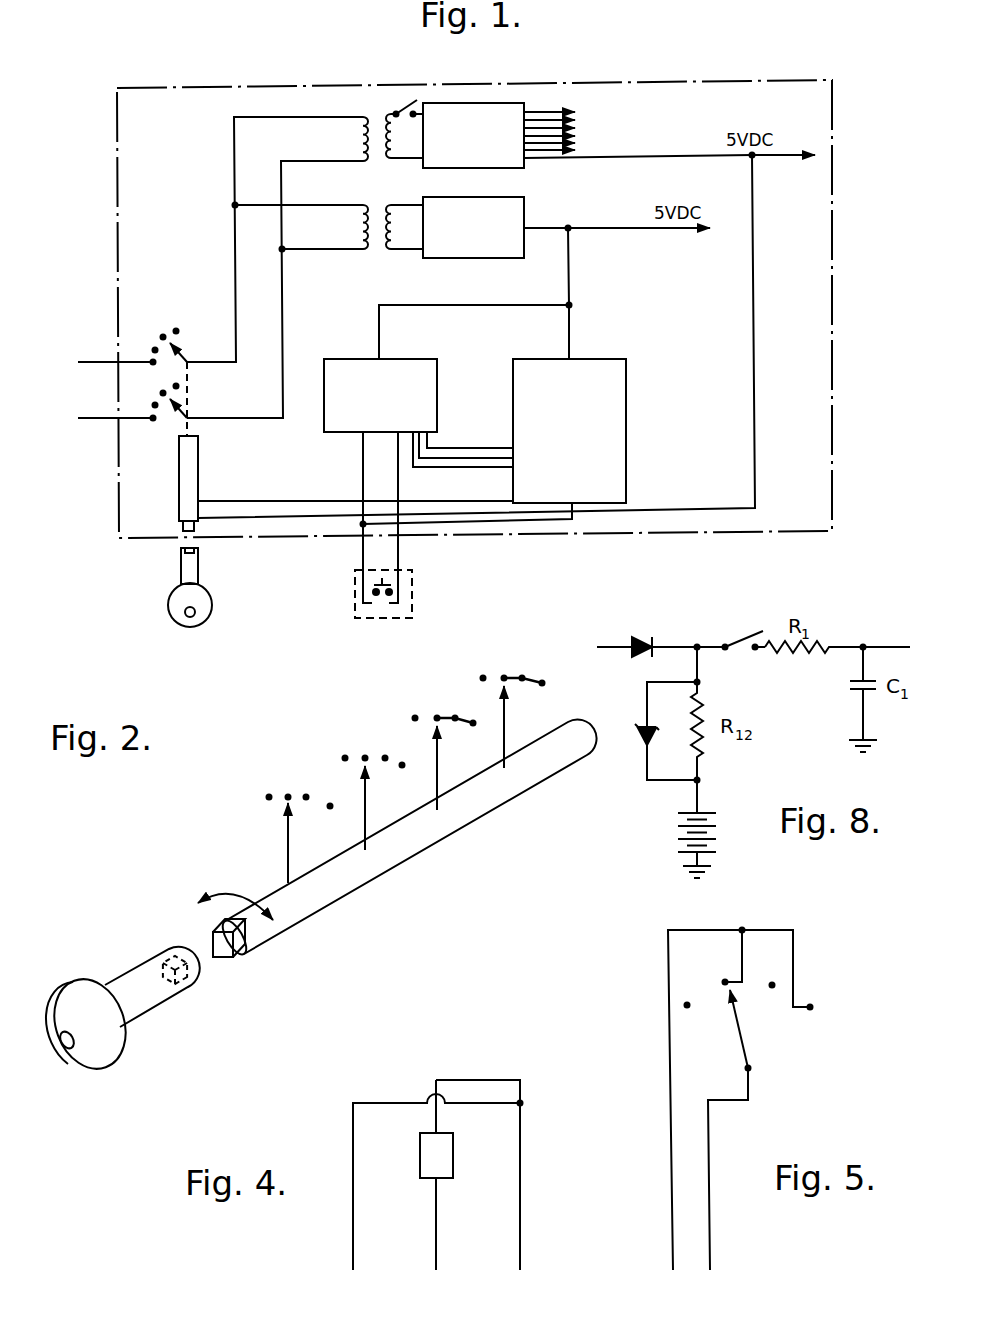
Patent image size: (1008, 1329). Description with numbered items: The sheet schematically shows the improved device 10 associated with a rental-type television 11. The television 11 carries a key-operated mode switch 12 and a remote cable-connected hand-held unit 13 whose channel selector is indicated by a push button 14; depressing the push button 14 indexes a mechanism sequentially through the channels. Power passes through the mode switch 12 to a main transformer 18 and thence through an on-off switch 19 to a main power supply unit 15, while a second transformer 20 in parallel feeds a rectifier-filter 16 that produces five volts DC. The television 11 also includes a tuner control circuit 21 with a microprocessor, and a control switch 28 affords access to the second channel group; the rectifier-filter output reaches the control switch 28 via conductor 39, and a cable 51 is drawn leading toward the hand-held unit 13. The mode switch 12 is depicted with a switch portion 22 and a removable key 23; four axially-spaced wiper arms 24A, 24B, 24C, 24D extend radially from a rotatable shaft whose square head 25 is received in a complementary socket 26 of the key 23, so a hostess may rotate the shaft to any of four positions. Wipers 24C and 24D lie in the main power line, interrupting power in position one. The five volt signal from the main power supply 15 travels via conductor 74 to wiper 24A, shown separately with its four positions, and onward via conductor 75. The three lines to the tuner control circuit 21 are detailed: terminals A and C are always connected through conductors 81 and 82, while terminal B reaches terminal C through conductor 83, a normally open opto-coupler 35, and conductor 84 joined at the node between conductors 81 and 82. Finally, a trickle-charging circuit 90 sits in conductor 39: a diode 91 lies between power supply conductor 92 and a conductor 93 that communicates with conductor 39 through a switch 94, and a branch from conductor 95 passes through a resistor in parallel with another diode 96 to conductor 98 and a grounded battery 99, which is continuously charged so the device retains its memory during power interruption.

In FIG. 1, the improved device 10 is at (640, 352).
In FIG. 1, the television 11 is at (722, 78).
In FIG. 1, the key-operated mode switch 12 is at (214, 487).
In FIG. 2, the key-operated mode switch 12 is at (190, 860).
In FIG. 1, the hand-held unit 13 is at (350, 592).
In FIG. 1, the push button 14 is at (405, 587).
In FIG. 1, the main power supply unit 15 is at (478, 103).
In FIG. 1, the rectifier-filter 16 is at (477, 259).
In FIG. 1, the main transformer 18 is at (362, 132).
In FIG. 1, the on-off switch 19 is at (402, 108).
In FIG. 1, the second transformer 20 is at (362, 220).
In FIG. 1, the tuner control circuit 21 is at (437, 373).
In FIG. 2, the switch portion 22 is at (408, 866).
In FIG. 2, the removable key 23 is at (139, 1030).
In FIG. 2, the wiper arm 24A is at (290, 833).
In FIG. 5, the wiper arm 24A is at (742, 1040).
In FIG. 2, the wiper arm 24B is at (366, 792).
In FIG. 1, the wiper arm 24C is at (182, 419).
In FIG. 2, the wiper arm 24C is at (438, 757).
In FIG. 1, the wiper arm 24D is at (182, 349).
In FIG. 2, the wiper arm 24D is at (505, 713).
In FIG. 2, the square head 25 is at (238, 945).
In FIG. 2, the socket 26 is at (168, 955).
In FIG. 1, the control switch 28 is at (627, 391).
In FIG. 4, the opto-coupler 35 is at (420, 1157).
In FIG. 1, the conductor 39 is at (571, 330).
In FIG. 8, the conductor 39 is at (766, 646).
In FIG. 1, the cable 51 is at (478, 526).
In FIG. 1, the conductor 74 is at (706, 508).
In FIG. 1, the conductor 75 is at (304, 500).
In FIG. 4, the conductor 81 is at (352, 1238).
In FIG. 5, the conductor 81 is at (710, 1231).
In FIG. 4, the conductor 82 is at (522, 1177).
In FIG. 5, the conductor 82 is at (668, 1228).
In FIG. 4, the conductor 83 is at (438, 1242).
In FIG. 4, the conductor 84 is at (483, 1080).
In FIG. 8, the trickle-charging circuit 90 is at (880, 615).
In FIG. 8, the diode 91 is at (642, 637).
In FIG. 8, the power supply conductor 92 is at (618, 647).
In FIG. 8, the conductor 93 is at (677, 647).
In FIG. 8, the switch 94 is at (746, 640).
In FIG. 8, the conductor 95 is at (700, 670).
In FIG. 8, the diode 96 is at (643, 732).
In FIG. 8, the conductor 98 is at (700, 793).
In FIG. 8, the battery 99 is at (680, 835).